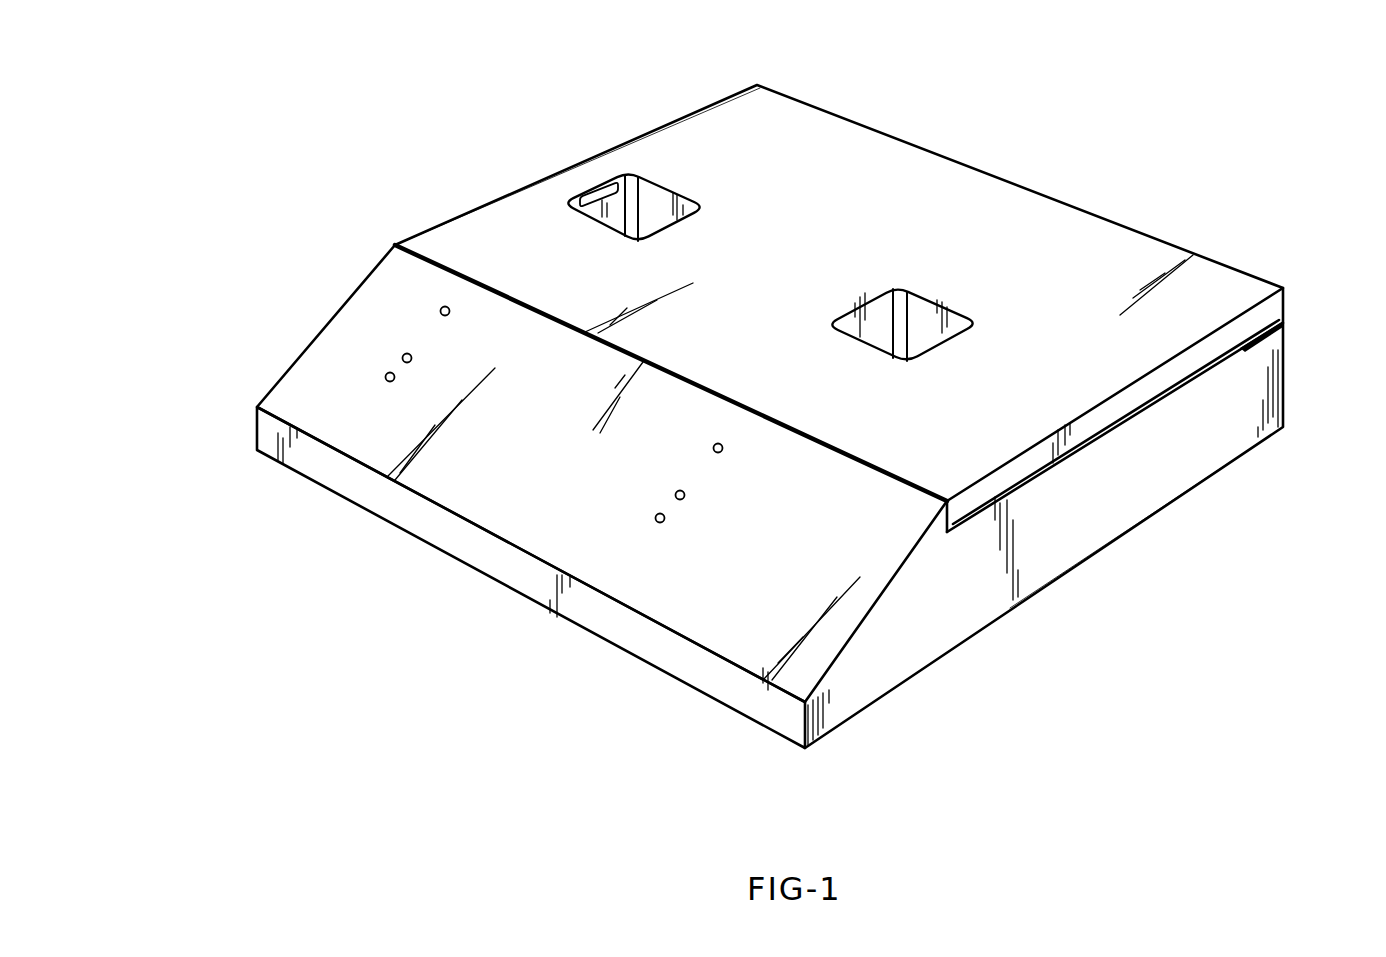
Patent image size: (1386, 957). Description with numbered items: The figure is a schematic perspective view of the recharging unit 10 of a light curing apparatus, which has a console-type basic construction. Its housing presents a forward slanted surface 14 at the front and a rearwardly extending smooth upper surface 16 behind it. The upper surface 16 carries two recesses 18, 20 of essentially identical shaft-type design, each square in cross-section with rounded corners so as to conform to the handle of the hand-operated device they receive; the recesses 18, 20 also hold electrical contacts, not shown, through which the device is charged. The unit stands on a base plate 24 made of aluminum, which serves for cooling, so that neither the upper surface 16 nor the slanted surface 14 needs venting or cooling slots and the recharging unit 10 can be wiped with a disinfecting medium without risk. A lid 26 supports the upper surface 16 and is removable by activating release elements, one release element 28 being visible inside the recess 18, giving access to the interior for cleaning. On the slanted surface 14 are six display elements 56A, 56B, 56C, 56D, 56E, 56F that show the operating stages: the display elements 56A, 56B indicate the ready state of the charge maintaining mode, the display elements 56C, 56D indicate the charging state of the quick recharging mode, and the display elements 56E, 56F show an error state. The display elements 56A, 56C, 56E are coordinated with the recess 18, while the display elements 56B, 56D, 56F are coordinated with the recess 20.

The recharging unit 10 is at (1178, 179).
The forward slanted surface 14 is at (525, 525).
The upper surface 16 is at (842, 155).
The recess 18 is at (657, 198).
The recess 20 is at (920, 313).
The base plate 24 is at (1162, 507).
The lid 26 is at (1225, 343).
The release element 28 is at (593, 193).
The display element 56A is at (440, 309).
The display element 56B is at (718, 453).
The display element 56C is at (402, 357).
The display element 56D is at (680, 500).
The display element 56E is at (385, 376).
The display element 56F is at (659, 523).